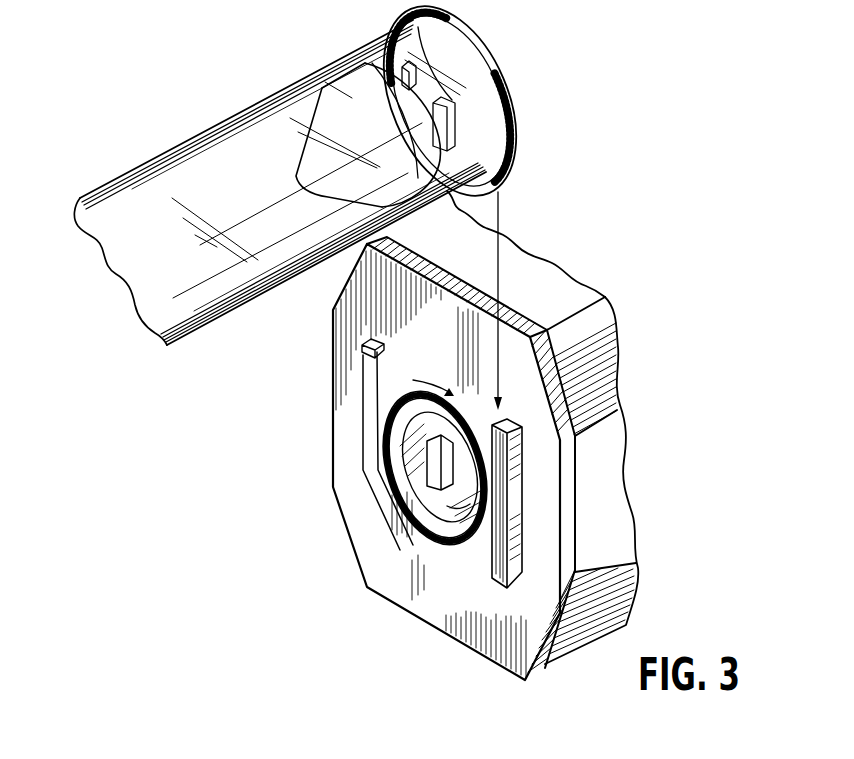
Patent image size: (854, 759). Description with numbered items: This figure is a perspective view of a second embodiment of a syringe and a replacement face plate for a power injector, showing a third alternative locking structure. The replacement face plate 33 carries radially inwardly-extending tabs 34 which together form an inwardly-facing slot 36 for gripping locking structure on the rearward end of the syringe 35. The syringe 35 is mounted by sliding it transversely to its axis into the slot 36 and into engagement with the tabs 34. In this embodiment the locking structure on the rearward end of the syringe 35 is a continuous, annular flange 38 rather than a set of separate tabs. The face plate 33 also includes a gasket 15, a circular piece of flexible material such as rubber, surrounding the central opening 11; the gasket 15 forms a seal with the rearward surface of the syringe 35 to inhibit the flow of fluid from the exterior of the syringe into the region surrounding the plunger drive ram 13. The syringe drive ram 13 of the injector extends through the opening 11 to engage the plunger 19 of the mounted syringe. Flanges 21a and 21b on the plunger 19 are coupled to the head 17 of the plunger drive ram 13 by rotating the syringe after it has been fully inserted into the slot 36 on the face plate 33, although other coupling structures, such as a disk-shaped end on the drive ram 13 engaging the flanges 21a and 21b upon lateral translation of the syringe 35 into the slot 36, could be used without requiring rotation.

The opening 11 is at (427, 488).
The syringe drive ram 13 is at (460, 506).
The gasket 15 is at (403, 404).
The head 17 is at (433, 461).
The plunger 19 is at (315, 106).
The flange 21a is at (417, 68).
The flange 21b is at (447, 100).
The replacement face plate 33 is at (352, 570).
The tabs 34 is at (365, 427).
The syringe 35 is at (253, 196).
The slot 36 is at (384, 343).
The annular flange 38 is at (505, 94).